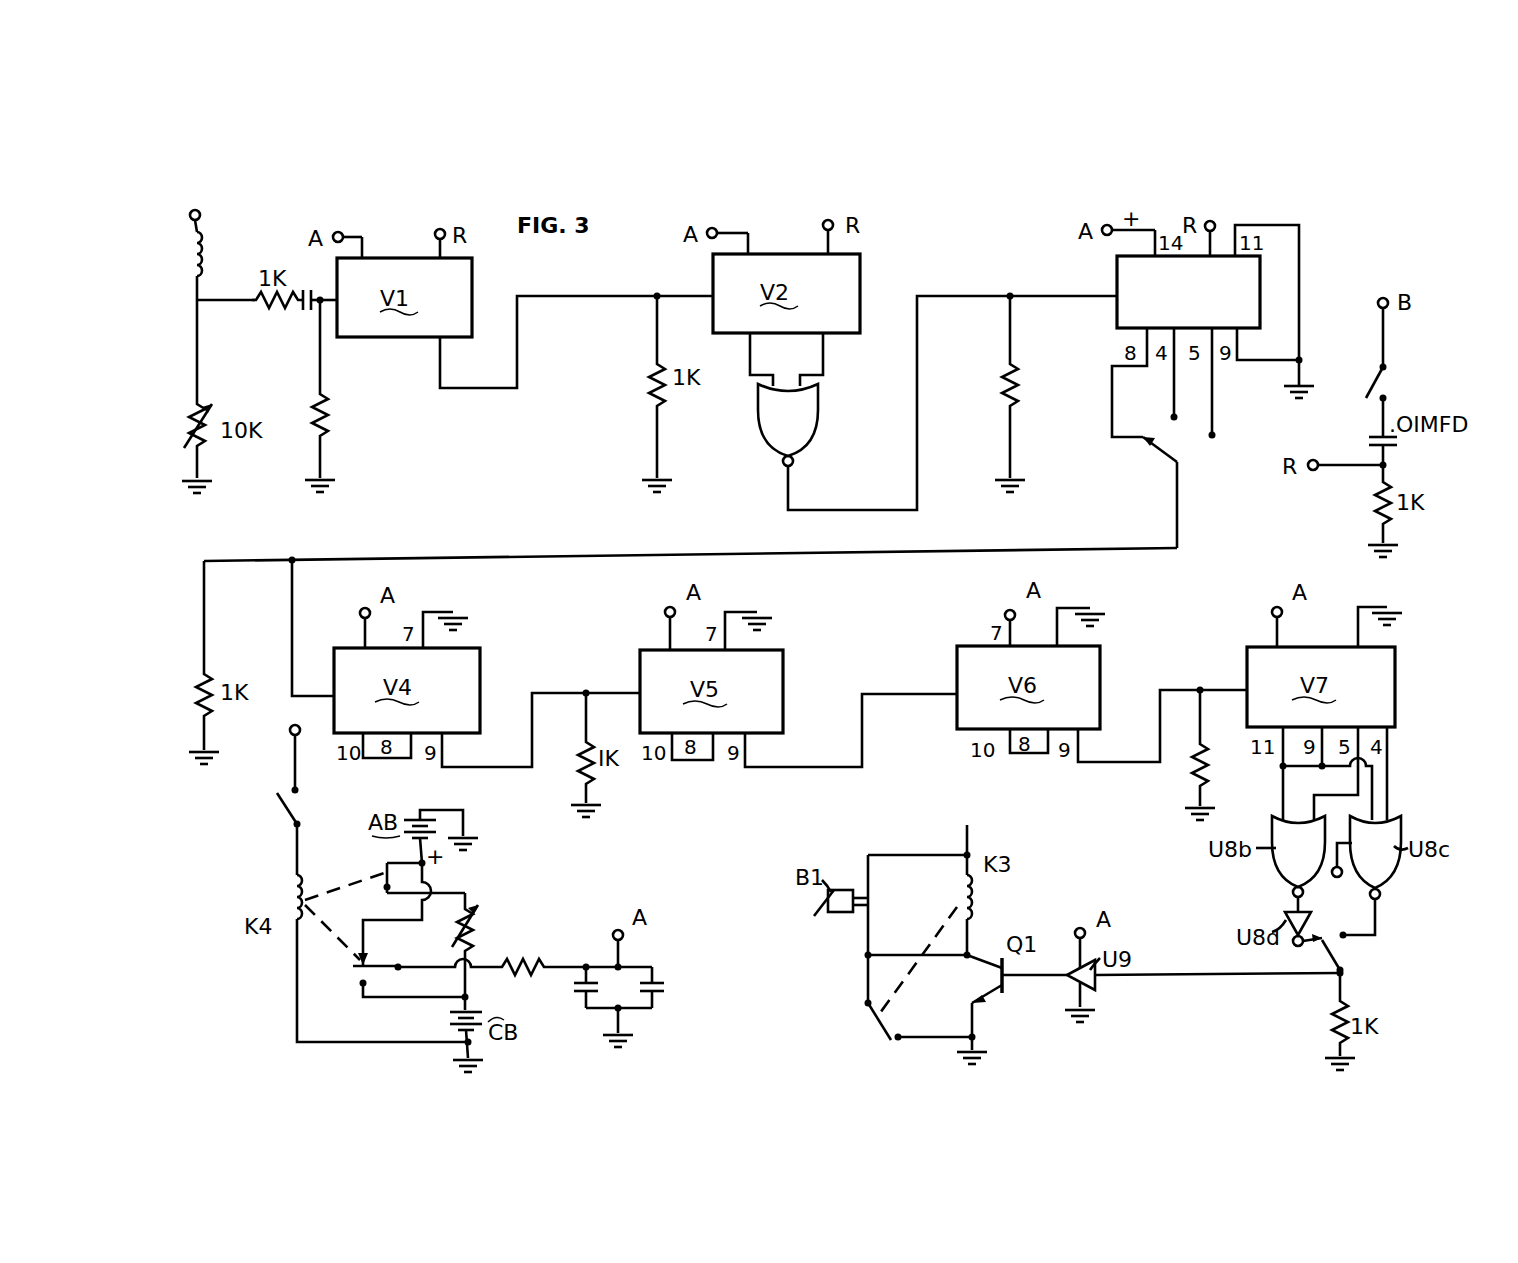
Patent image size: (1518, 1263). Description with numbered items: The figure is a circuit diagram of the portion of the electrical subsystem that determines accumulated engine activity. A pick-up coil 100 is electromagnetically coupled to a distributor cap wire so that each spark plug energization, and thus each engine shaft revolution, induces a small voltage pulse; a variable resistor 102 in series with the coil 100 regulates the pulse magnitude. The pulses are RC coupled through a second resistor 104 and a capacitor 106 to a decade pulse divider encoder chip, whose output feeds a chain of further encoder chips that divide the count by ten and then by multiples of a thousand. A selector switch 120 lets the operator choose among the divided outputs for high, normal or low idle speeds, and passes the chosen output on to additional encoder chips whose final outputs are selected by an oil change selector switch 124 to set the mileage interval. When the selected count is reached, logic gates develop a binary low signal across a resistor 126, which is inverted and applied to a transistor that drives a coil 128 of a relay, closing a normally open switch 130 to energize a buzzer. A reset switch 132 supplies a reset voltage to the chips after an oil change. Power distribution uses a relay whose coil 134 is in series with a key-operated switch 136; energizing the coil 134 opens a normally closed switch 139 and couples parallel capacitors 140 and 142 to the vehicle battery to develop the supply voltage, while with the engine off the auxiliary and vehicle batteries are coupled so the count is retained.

The pick-up coil 100 is at (205, 250).
The variable resistor 102 is at (192, 418).
The second resistor 104 is at (282, 306).
The capacitor 106 is at (307, 320).
The selector switch 120 is at (1182, 438).
The oil change selector switch 124 is at (1333, 945).
The resistor 126 is at (1330, 1020).
The coil 128 is at (975, 897).
The normally open switch 130 is at (874, 1030).
The reset switch 132 is at (1376, 393).
The coil 134 is at (290, 895).
The switch 136 is at (300, 808).
The normally closed switch 139 is at (388, 874).
The capacitor 140 is at (580, 1000).
The capacitor 142 is at (658, 997).